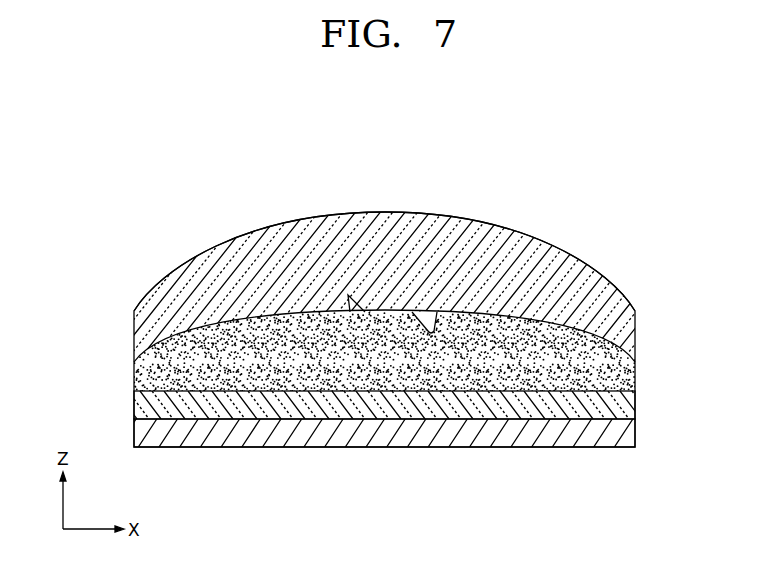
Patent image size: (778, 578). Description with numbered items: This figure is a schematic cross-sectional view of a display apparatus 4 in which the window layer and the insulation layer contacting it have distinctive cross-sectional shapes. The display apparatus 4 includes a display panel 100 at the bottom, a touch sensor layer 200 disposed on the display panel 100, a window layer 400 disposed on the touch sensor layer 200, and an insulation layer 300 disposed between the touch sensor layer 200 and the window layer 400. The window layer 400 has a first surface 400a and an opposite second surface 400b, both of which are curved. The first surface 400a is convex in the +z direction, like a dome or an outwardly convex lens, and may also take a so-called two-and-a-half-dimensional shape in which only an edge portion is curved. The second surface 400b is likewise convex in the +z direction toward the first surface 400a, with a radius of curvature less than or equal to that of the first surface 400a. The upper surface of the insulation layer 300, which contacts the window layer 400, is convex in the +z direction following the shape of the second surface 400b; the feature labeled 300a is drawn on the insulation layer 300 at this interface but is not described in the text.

The display apparatus 4 is at (389, 323).
The display panel 100 is at (624, 435).
The touch sensor layer 200 is at (624, 409).
The insulation layer 300 is at (624, 382).
The protrusion of wavelength conversion layer 300a is at (348, 295).
The window layer 400 is at (627, 351).
The first surface 400a is at (378, 213).
The second surface 400b is at (437, 312).